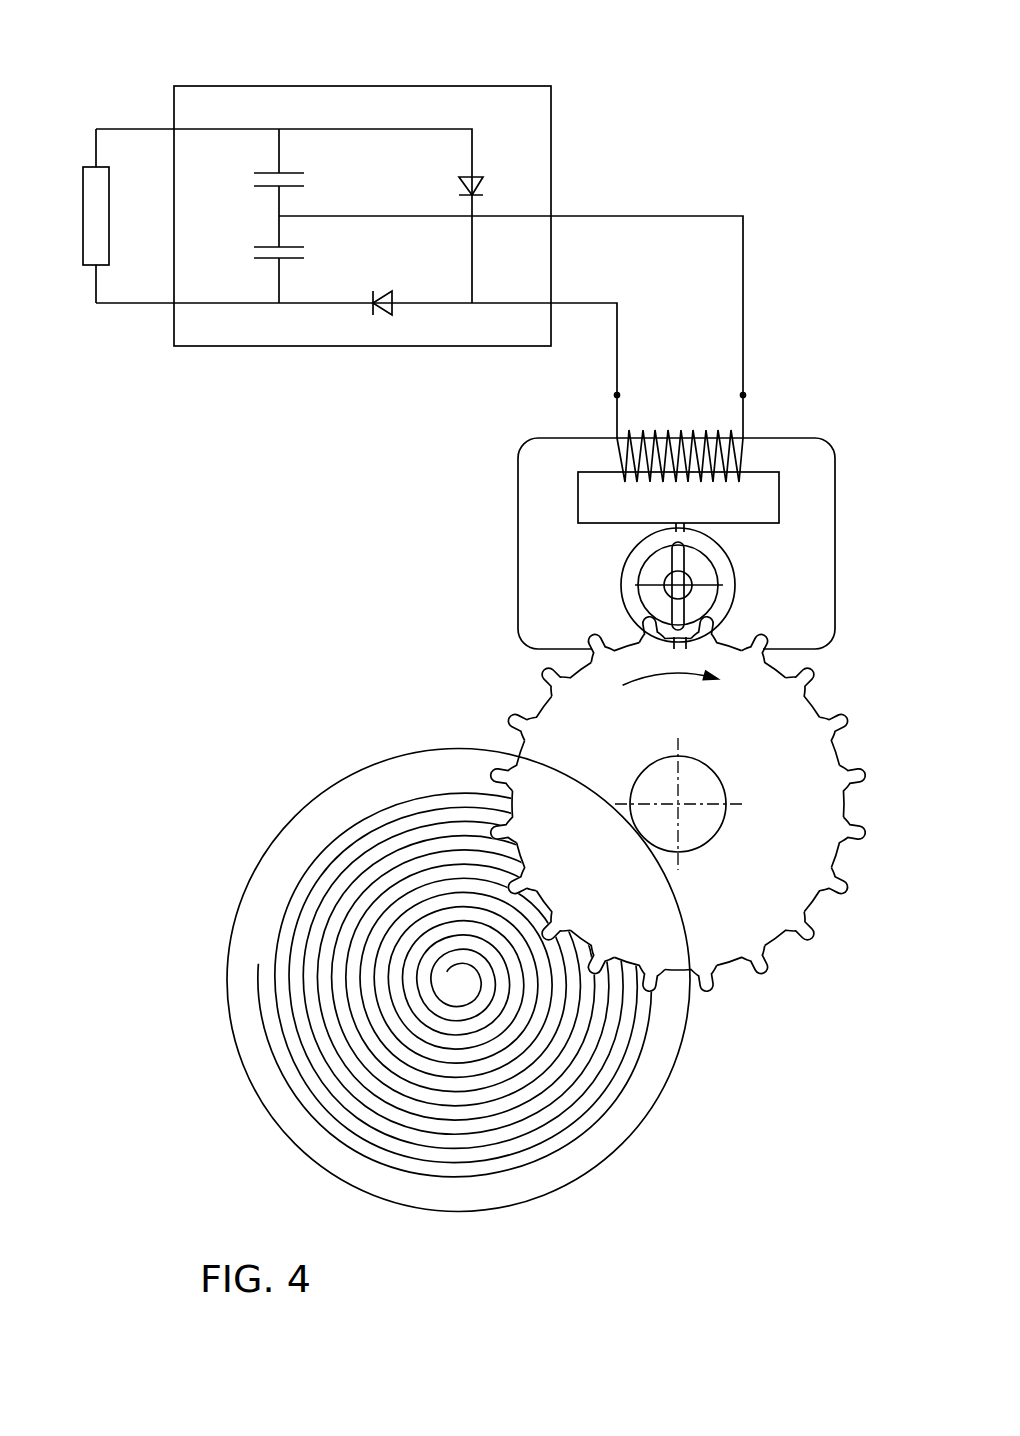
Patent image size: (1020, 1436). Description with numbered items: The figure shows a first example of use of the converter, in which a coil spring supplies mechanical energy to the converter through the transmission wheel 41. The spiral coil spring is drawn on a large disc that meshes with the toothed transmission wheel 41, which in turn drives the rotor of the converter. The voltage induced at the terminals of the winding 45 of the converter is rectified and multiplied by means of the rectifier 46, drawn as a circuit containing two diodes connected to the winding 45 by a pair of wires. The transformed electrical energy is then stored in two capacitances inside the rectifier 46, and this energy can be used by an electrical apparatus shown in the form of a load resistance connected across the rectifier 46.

The transmission wheel 41 is at (827, 769).
The winding 45 is at (743, 417).
The rectifier 46 is at (513, 111).